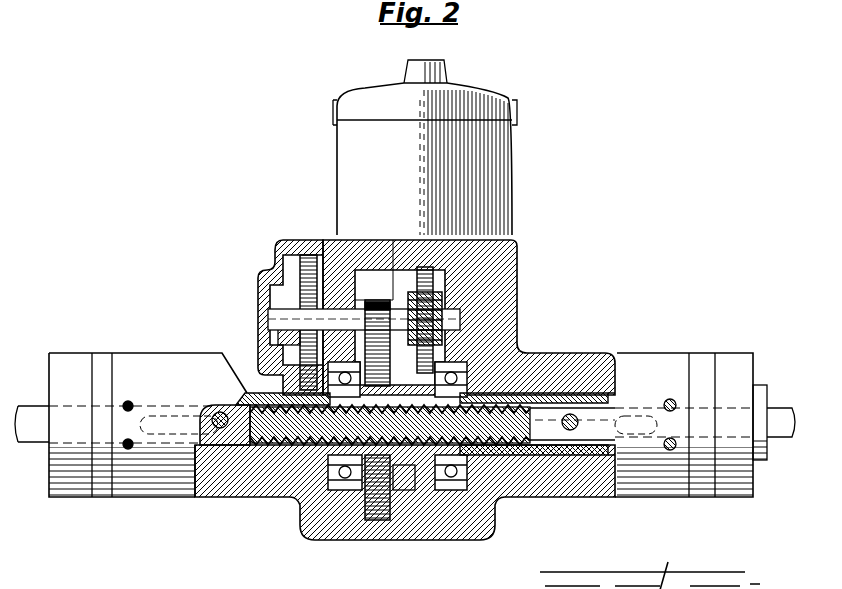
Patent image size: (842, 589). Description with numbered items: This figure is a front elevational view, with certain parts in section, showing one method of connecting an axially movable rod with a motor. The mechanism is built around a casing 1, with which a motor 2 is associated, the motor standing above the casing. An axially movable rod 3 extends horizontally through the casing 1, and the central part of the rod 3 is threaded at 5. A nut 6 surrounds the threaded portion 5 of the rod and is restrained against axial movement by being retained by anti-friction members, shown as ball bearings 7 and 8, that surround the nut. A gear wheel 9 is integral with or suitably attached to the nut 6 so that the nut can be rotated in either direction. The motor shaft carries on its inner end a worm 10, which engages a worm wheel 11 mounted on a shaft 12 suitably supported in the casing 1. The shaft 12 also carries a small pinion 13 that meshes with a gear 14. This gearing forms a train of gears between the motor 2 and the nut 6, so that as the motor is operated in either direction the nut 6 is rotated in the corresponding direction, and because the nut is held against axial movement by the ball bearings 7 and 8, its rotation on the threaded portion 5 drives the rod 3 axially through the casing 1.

The casing 1 is at (150, 372).
The motor 2 is at (497, 190).
The axially movable rod 3 is at (775, 418).
The threaded portion 5 is at (291, 447).
The nut 6 is at (423, 470).
The ball bearing 7 is at (350, 478).
The ball bearing 8 is at (448, 473).
The gear wheel 9 is at (388, 515).
The worm 10 is at (450, 300).
The worm wheel 11 is at (432, 347).
The shaft 12 is at (455, 314).
The small pinion 13 is at (268, 322).
The gear 14 is at (308, 258).